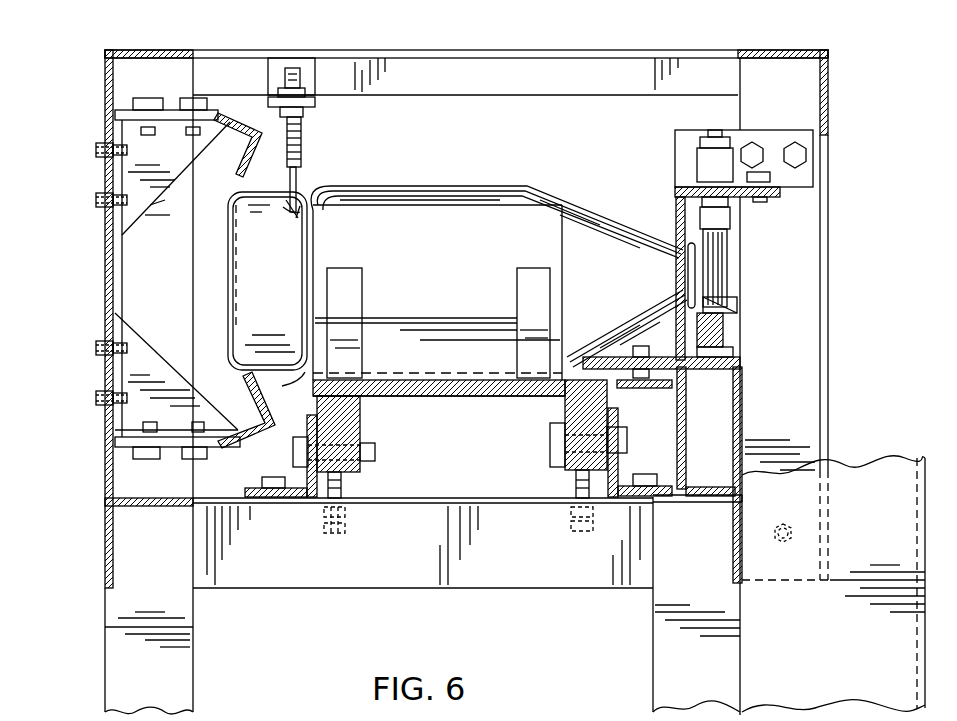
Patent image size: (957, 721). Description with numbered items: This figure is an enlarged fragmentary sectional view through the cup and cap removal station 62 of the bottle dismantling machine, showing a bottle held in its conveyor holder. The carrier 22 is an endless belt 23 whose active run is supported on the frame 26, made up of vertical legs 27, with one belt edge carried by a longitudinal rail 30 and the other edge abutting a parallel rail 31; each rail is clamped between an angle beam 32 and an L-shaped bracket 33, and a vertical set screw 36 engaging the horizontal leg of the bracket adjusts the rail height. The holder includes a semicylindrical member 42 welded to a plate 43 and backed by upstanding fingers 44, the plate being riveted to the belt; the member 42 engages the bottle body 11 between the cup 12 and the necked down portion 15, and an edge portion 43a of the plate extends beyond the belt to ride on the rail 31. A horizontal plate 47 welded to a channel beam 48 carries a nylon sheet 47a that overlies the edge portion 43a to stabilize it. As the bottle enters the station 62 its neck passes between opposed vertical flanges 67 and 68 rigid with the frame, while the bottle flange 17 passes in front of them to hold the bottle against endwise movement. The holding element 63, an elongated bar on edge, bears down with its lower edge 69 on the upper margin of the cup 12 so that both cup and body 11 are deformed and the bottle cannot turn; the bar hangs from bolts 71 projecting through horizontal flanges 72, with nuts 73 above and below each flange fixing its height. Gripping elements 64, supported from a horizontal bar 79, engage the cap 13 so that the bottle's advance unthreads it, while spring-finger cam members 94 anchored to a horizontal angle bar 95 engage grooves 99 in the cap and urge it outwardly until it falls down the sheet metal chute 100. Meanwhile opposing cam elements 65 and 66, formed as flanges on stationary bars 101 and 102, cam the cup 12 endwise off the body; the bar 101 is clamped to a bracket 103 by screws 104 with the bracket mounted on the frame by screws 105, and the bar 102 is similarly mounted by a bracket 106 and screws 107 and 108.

The bottle body 11 is at (530, 183).
The cup 12 is at (286, 310).
The cap 13 is at (727, 268).
The necked down portion 15 is at (683, 280).
The flange 17 is at (685, 298).
The carrier 22 is at (484, 405).
The belt 23 is at (433, 397).
The frame 26 is at (95, 539).
The vertical legs 27 is at (180, 652).
The longitudinal rail 30 is at (362, 400).
The parallel rail 31 is at (567, 407).
The angle beam 32 is at (307, 433).
The L-shaped bracket 33 is at (358, 463).
The vertical set screw 36 is at (343, 487).
The semicylindrical member 42 is at (425, 210).
The plate 43 is at (420, 377).
The edge portion 43a is at (575, 373).
The fingers 44 is at (362, 300).
The horizontal plate 47 is at (735, 400).
The nylon sheet 47a is at (610, 352).
The channel beam 48 is at (686, 453).
The station 62 is at (470, 114).
The holding element 63 is at (320, 178).
The gripping elements 64 is at (748, 239).
The cam element 65 is at (242, 162).
The cam element 66 is at (262, 385).
The vertical flange 67 is at (675, 230).
The vertical flange 68 is at (678, 333).
The lower edge 69 is at (287, 217).
The bolts 71 is at (301, 144).
The horizontal flanges 72 is at (268, 90).
The nuts 73 is at (332, 102).
The horizontal bar 79 is at (780, 195).
The cam members 94 is at (737, 308).
The horizontal angle bar 95 is at (722, 322).
The grooves 99 is at (698, 268).
The sheet metal chute 100 is at (860, 652).
The stationary bar 101 is at (212, 148).
The stationary bar 102 is at (243, 410).
The bracket 103 is at (160, 208).
The screws 104 is at (153, 100).
The screws 105 is at (96, 198).
The bracket 106 is at (157, 357).
The screws 107 is at (193, 457).
The screws 108 is at (96, 395).